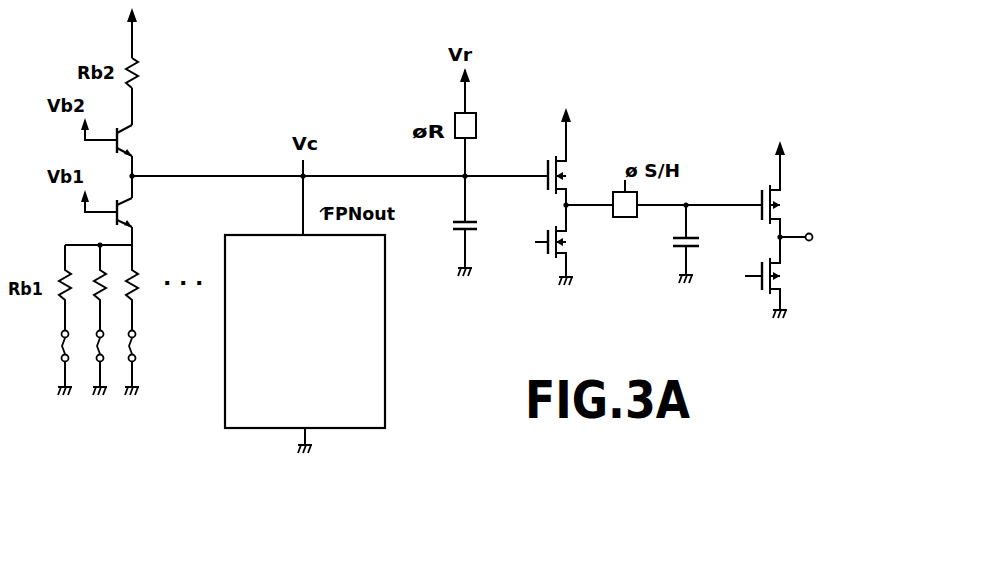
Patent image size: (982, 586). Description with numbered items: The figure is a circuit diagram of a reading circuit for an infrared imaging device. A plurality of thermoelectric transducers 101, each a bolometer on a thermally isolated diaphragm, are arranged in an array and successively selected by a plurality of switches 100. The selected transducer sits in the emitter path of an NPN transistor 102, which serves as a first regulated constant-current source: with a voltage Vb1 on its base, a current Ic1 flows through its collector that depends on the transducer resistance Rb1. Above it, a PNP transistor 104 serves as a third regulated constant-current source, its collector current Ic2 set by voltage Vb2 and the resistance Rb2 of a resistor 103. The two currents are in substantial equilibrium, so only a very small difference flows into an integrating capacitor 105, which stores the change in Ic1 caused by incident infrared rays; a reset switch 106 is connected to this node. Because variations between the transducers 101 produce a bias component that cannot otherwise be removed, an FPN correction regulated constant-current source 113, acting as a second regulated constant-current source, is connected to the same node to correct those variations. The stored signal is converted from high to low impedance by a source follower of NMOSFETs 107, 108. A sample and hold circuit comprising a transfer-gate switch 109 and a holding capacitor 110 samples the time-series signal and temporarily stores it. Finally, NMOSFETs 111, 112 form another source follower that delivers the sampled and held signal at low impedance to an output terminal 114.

The switches 100 is at (145, 350).
The thermoelectric transducers 101 is at (140, 296).
The NPN transistor 102 is at (134, 223).
The resistor 103 is at (143, 65).
The PNP transistor 104 is at (134, 142).
The integrating capacitor 105 is at (480, 222).
The reset switch 106 is at (477, 122).
The NMOSFET 107 is at (568, 168).
The NMOSFET 108 is at (570, 248).
The switch 109 is at (628, 218).
The holding capacitor 110 is at (701, 243).
The NMOSFET 111 is at (784, 204).
The NMOSFET 112 is at (785, 280).
The FPN correction regulated constant-current source 113 is at (386, 348).
The output terminal 114 is at (815, 237).